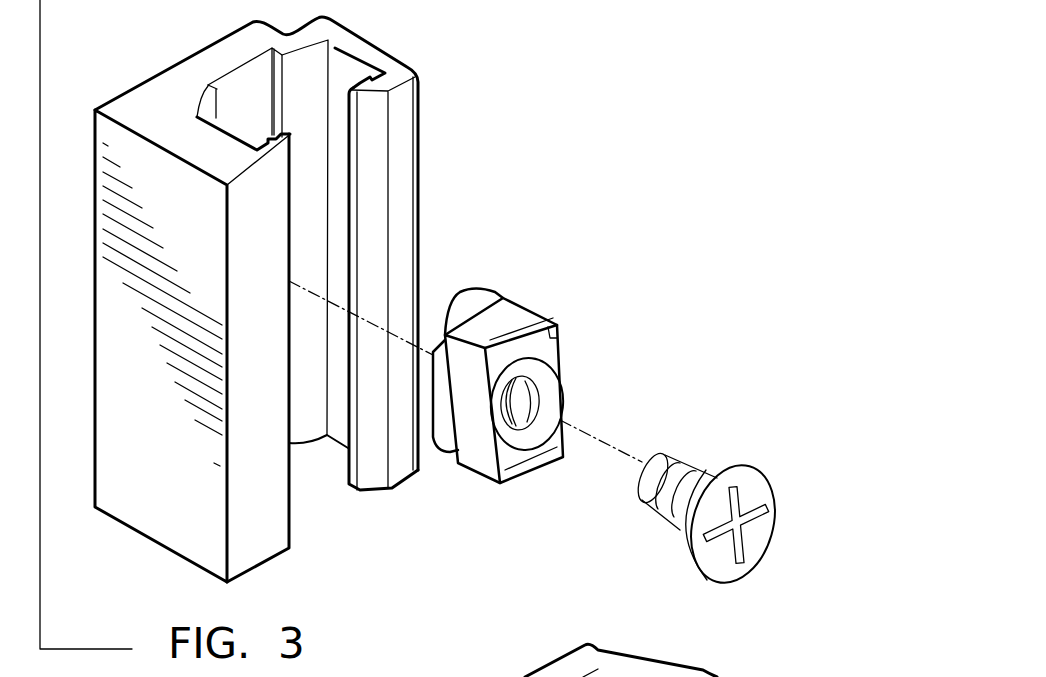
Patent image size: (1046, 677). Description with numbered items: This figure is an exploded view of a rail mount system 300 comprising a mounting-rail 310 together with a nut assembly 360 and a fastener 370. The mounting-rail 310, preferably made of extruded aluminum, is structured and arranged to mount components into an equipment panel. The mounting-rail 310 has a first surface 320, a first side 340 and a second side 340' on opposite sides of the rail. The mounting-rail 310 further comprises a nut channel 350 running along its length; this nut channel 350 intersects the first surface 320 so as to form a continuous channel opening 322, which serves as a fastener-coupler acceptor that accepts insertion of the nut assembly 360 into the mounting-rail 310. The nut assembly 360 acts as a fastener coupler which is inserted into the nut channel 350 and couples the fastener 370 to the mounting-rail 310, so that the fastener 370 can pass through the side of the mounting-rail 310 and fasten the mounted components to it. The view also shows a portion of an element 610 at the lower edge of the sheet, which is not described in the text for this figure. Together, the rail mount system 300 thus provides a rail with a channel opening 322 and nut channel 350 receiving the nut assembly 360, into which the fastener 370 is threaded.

The rail mount system 300 is at (640, 40).
The mounting-rail 310 is at (640, 65).
The first surface 320 is at (248, 548).
The continuous channel opening 322 is at (377, 531).
The first side 340 is at (157, 346).
The second side 340' is at (375, 240).
The nut channel 350 is at (377, 509).
The nut assembly 360 is at (577, 278).
The fastener 370 is at (773, 480).
The bracket 610 is at (557, 676).